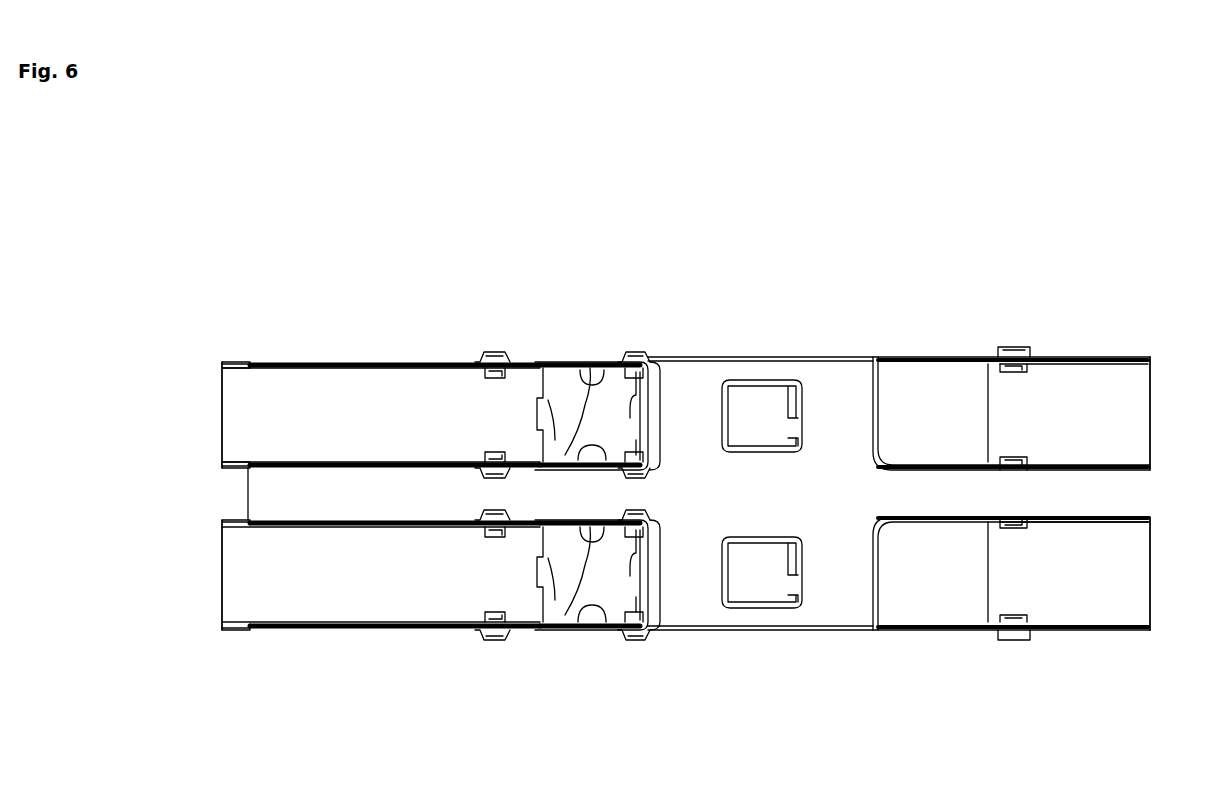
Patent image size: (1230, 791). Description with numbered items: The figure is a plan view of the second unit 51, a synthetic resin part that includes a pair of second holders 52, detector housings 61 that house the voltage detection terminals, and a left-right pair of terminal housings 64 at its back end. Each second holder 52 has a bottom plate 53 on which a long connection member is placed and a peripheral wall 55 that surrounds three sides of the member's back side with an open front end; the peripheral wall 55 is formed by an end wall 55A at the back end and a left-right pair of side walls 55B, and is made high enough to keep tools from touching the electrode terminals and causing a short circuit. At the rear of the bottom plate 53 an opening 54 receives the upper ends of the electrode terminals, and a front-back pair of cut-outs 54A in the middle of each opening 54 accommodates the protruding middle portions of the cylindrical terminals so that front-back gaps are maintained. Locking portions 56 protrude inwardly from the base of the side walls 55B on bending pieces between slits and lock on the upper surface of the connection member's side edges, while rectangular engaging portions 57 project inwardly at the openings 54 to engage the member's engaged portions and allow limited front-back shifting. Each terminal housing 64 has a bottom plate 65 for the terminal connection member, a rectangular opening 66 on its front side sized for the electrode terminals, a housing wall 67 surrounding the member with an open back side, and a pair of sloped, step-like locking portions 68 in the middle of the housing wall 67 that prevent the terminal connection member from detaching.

The second unit 51 is at (770, 229).
The second holder 52 is at (437, 316).
The bottom plate 53 is at (315, 388).
The opening 54 is at (570, 365).
The cut-out 54A is at (560, 366).
The peripheral wall 55 is at (380, 360).
The end wall 55A is at (652, 400).
The side wall 55B is at (272, 362).
The locking portion 56 is at (480, 360).
The engaging portion 57 is at (600, 365).
The detector housing 61 is at (785, 350).
The terminal housing 64 is at (1078, 334).
The bottom plate 65 is at (1132, 410).
The opening 66 is at (897, 357).
The housing wall 67 is at (1130, 355).
The locking portion 68 is at (985, 357).